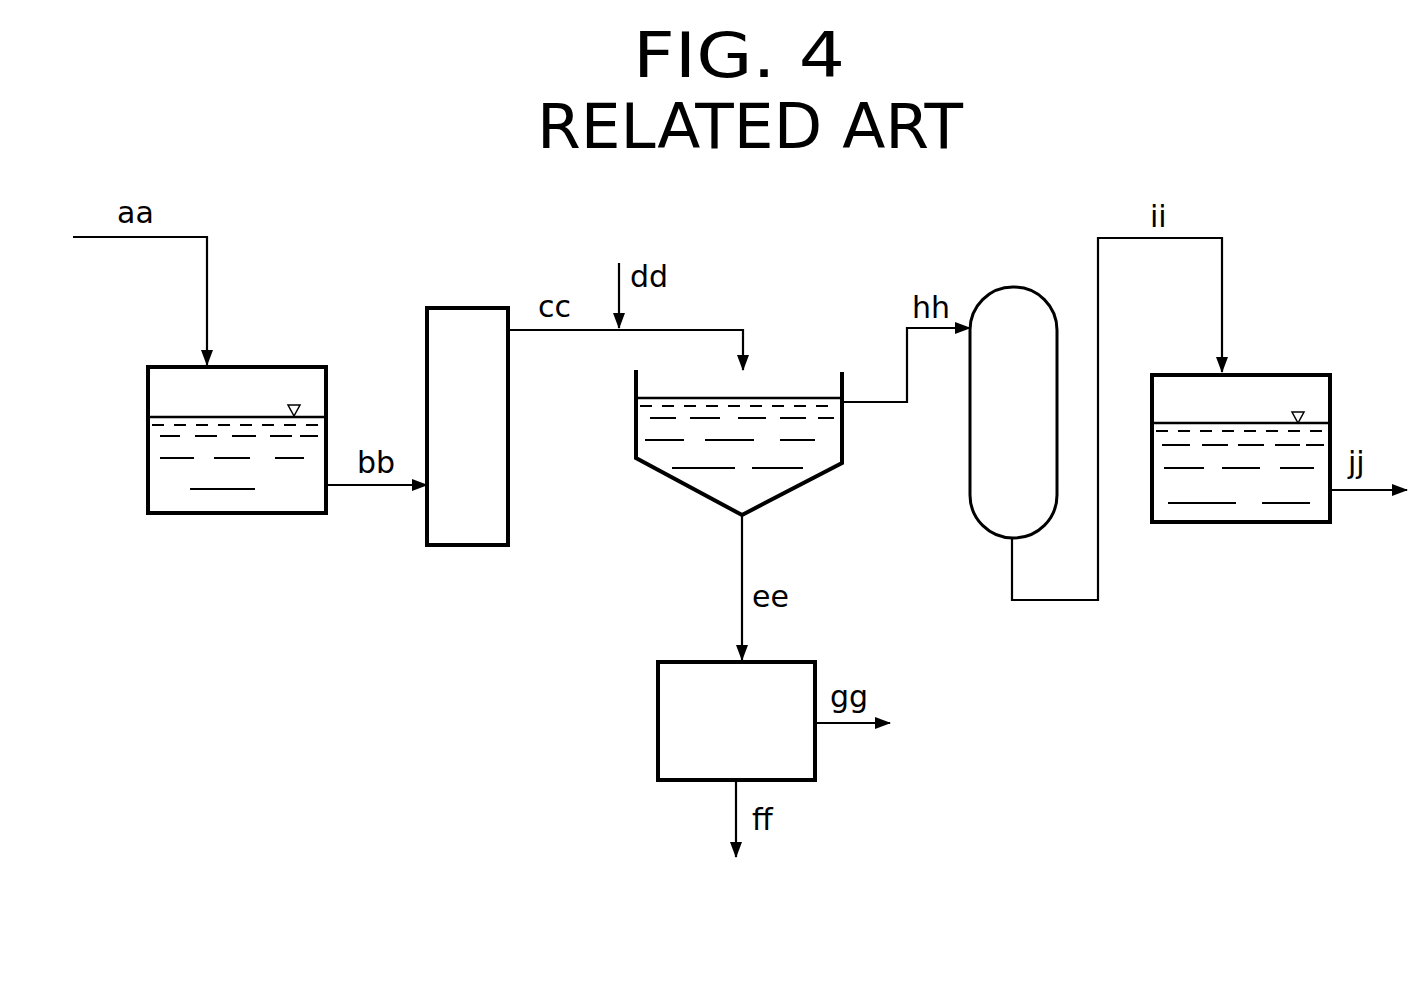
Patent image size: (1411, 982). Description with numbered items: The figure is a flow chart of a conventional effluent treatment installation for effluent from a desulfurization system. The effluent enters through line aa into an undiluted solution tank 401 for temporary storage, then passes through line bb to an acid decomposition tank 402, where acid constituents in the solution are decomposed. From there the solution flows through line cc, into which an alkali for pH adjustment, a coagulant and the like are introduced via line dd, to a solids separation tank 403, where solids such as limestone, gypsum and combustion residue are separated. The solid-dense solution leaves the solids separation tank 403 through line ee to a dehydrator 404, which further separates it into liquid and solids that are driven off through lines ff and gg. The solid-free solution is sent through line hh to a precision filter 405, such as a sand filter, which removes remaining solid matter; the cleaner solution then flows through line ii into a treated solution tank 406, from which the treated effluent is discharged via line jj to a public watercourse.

The undiluted solution tank 401 is at (237, 462).
The acid decomposition tank 402 is at (467, 445).
The solids separation tank 403 is at (739, 447).
The dehydrator 404 is at (706, 721).
The precision filter 405 is at (985, 412).
The treated solution tank 406 is at (1241, 467).